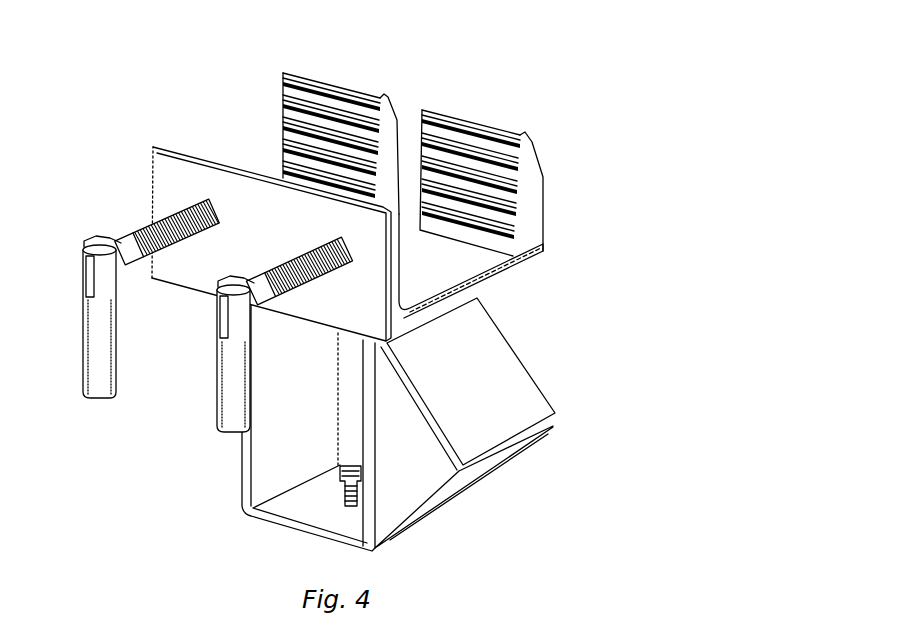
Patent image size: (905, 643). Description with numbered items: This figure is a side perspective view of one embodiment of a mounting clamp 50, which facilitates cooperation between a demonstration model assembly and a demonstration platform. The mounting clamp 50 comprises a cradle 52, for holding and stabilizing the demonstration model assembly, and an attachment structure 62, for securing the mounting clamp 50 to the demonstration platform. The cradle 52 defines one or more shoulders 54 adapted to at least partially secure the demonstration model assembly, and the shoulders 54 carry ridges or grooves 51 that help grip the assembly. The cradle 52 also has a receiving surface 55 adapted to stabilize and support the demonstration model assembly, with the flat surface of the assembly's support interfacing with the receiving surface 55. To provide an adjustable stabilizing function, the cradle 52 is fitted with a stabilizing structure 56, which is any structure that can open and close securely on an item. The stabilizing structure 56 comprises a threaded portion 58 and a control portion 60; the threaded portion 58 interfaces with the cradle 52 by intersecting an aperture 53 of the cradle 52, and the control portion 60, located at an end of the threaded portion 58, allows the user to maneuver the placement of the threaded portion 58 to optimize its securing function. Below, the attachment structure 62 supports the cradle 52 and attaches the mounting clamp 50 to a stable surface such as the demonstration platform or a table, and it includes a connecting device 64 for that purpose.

The mounting clamp 50 is at (385, 172).
The ridges or grooves 51 is at (280, 96).
The cradle 52 is at (210, 128).
The aperture 53 is at (213, 211).
The shoulders 54 is at (418, 138).
The receiving surface 55 is at (458, 263).
The stabilizing structure 56 is at (80, 282).
The threaded portion 58 is at (87, 239).
The control portion 60 is at (83, 356).
The attachment structure 62 is at (266, 425).
The connecting device 64 is at (352, 466).